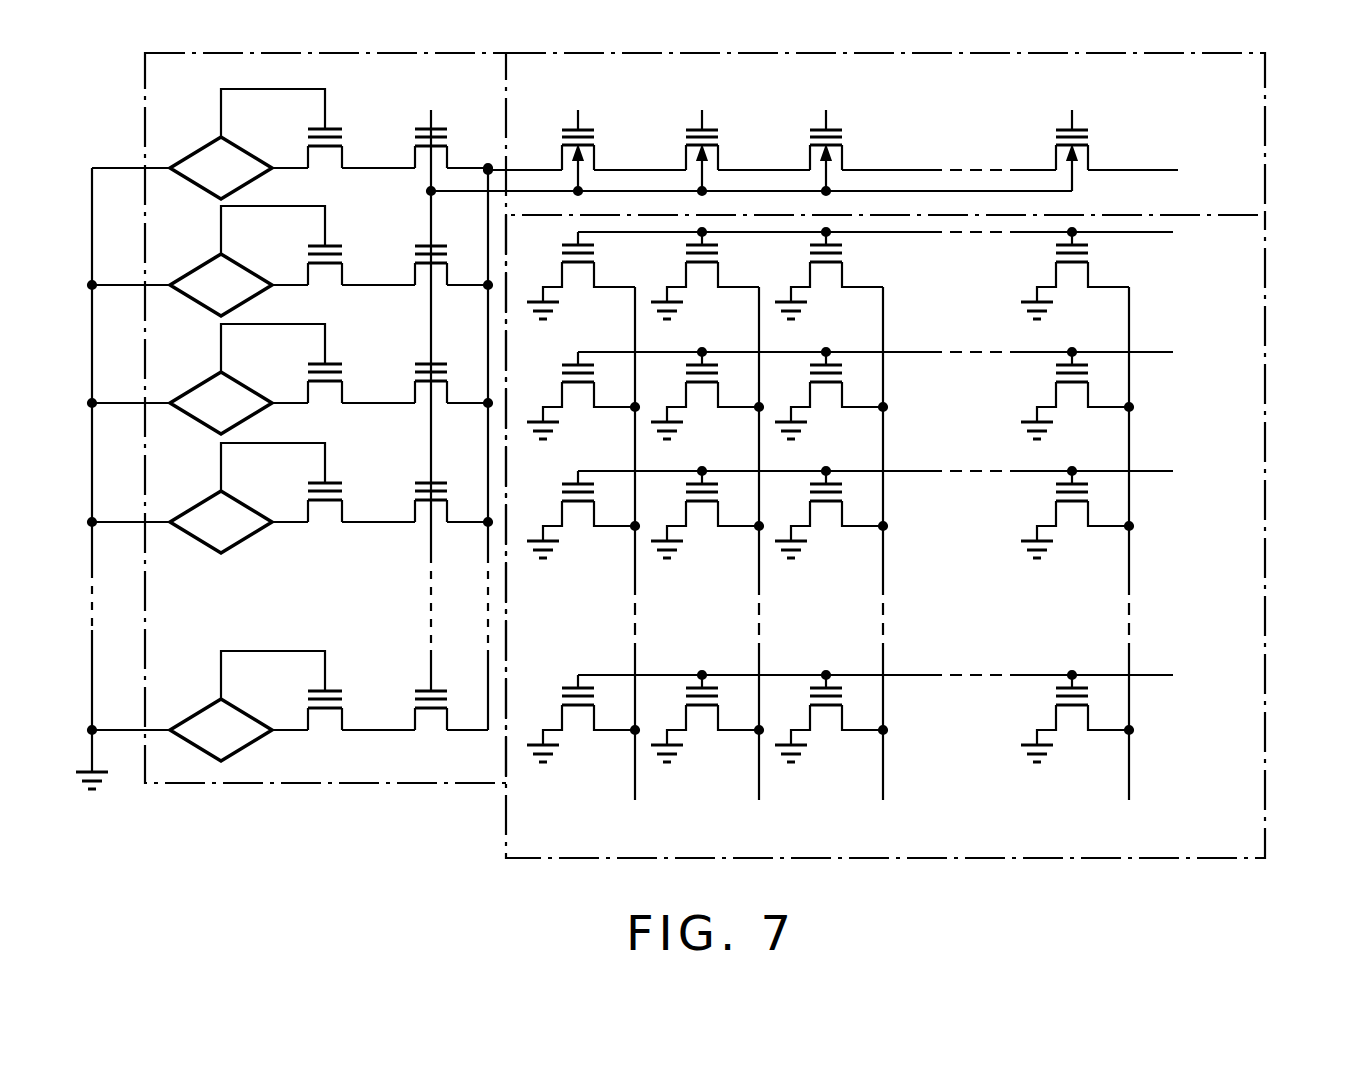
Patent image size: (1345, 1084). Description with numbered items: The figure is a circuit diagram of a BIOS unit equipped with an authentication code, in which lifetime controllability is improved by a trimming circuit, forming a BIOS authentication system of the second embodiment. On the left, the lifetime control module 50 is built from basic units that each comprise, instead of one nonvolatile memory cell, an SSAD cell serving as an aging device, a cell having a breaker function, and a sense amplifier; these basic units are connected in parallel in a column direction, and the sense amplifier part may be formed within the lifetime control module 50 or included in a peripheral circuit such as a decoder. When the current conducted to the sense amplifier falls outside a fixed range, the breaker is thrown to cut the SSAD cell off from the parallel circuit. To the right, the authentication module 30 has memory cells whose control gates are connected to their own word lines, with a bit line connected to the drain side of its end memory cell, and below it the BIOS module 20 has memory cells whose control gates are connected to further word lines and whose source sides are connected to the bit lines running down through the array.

The BIOS module 20 is at (1265, 547).
The authentication module 30 is at (1265, 137).
The lifetime control module 50 is at (365, 783).